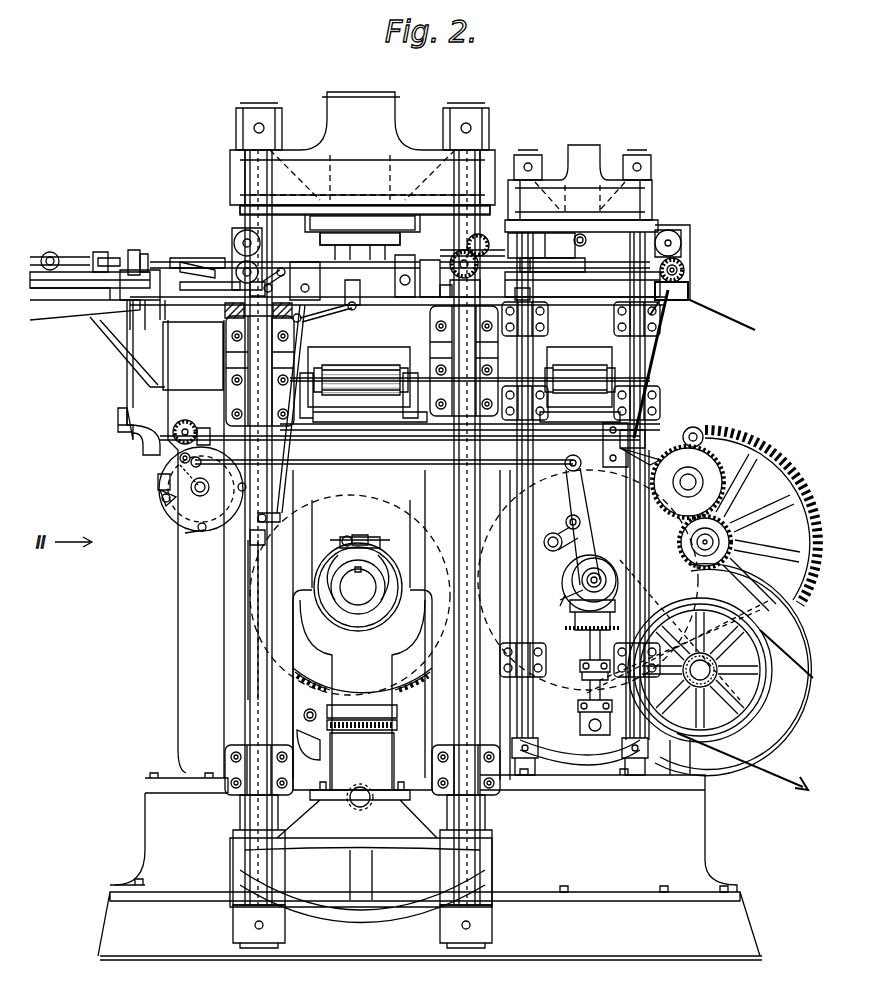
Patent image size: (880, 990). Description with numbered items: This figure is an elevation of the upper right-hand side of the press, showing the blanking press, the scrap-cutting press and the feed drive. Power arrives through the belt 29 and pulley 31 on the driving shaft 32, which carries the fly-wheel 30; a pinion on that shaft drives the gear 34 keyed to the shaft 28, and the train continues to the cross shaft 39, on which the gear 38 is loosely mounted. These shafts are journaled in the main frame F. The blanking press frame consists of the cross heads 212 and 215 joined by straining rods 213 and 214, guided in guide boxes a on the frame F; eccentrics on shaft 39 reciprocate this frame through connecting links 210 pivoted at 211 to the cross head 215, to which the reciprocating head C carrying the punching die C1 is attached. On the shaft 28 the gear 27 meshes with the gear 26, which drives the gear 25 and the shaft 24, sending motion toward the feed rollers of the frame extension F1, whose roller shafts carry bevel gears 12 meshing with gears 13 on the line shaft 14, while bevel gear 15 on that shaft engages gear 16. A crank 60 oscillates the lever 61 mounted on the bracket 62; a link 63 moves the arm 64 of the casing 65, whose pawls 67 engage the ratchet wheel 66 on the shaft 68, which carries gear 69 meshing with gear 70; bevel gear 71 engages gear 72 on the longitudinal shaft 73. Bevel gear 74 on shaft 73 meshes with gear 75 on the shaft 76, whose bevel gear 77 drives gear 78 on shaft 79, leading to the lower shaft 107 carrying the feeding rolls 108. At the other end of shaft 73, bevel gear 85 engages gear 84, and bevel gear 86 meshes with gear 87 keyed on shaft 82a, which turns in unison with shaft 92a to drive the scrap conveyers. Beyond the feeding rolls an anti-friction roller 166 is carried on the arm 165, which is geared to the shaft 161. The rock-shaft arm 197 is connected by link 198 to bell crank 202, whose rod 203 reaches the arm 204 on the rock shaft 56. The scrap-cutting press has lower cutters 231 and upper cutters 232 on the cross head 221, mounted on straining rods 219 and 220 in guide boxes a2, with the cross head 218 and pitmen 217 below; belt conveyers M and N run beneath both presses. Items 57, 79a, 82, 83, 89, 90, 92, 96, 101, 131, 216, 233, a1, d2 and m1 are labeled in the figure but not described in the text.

The bevel gear 12 is at (110, 252).
The bevel gear 13 is at (100, 255).
The driven line shaft 14 is at (60, 262).
The bevel gear 15 is at (133, 256).
The bevel gear 16 is at (140, 260).
The shaft 24 is at (702, 434).
The gear 25 is at (725, 434).
The gear 26 is at (712, 470).
The gear 27 is at (732, 530).
The power shaft 28 is at (712, 547).
The belt 29 is at (770, 772).
The fly-wheel 30 is at (790, 716).
The pulley 31 is at (760, 688).
The driving shaft 32 is at (692, 672).
The gear 34 is at (785, 465).
The gear 38 is at (362, 673).
The cross shaft 39 is at (358, 587).
The rock shaft 56 is at (262, 518).
The bearing cap 57 is at (345, 630).
The crank 60 is at (566, 605).
The lever 61 is at (585, 550).
The bracket 62 is at (566, 522).
The link 63 is at (335, 461).
The arm 64 is at (183, 465).
The casing 65 is at (202, 489).
The ratchet wheel 66 is at (165, 500).
The pawls 67 is at (158, 480).
The shaft 68 is at (209, 487).
The gear wheel 69 is at (180, 520).
The gear 70 is at (187, 422).
The bevel gear 71 is at (183, 420).
The bevel gear 72 is at (203, 428).
The longitudinal shaft 73 is at (310, 440).
The bevel gear 74 is at (150, 448).
The bevel gear 75 is at (128, 432).
The shaft 76 is at (128, 382).
The bevel gear 77 is at (125, 290).
The bevel gear 78 is at (150, 282).
The shaft 79 is at (177, 258).
The guide block 79a is at (441, 291).
The gear 82 is at (458, 252).
The shaft 82a is at (685, 273).
The block 83 is at (475, 288).
The bevel gear 84 is at (640, 448).
The bevel gear 85 is at (636, 432).
The bevel gear 86 is at (690, 287).
The bevel gear 87 is at (690, 270).
The gear 89 is at (683, 265).
The roller 90 is at (680, 238).
The gear 92 is at (470, 240).
The shaft 92a is at (676, 246).
The bolt 96 is at (588, 240).
The block 101 is at (522, 292).
The lower shaft 107 is at (243, 244).
The feeding rolls 108 is at (236, 240).
The guide 131 is at (197, 261).
The shaft 161 is at (210, 292).
The arm 165 is at (271, 288).
The anti-friction roller 166 is at (272, 262).
The arm 197 is at (355, 308).
The link 198 is at (332, 314).
The bell crank 202 is at (300, 322).
The rod 203 is at (298, 336).
The arm 204 is at (268, 523).
The connecting links 210 is at (362, 690).
The pivot 211 is at (357, 808).
The cross head 212 is at (361, 880).
The straining rod 213 is at (487, 823).
The straining rod 214 is at (242, 808).
The cross head 215 is at (362, 148).
The plate 216 is at (365, 238).
The pitman 217 is at (592, 648).
The cross head 218 is at (580, 722).
The straining rod 219 is at (640, 575).
The straining rod 220 is at (509, 625).
The reciprocating cross head 221 is at (580, 182).
The lower cutters 231 is at (585, 268).
The upper cutters 232 is at (541, 245).
The block 233 is at (582, 284).
The guide boxes a is at (362, 550).
The bearing a1 is at (305, 281).
The guide boxes a2 is at (612, 322).
The reciprocating head C is at (372, 218).
The punching die C1 is at (380, 252).
The block d2 is at (405, 276).
The main frame F is at (182, 652).
The frame extension F1 is at (70, 312).
The belt conveyer M is at (372, 370).
The motor shaft m1 is at (430, 378).
The belt conveyer N is at (590, 370).